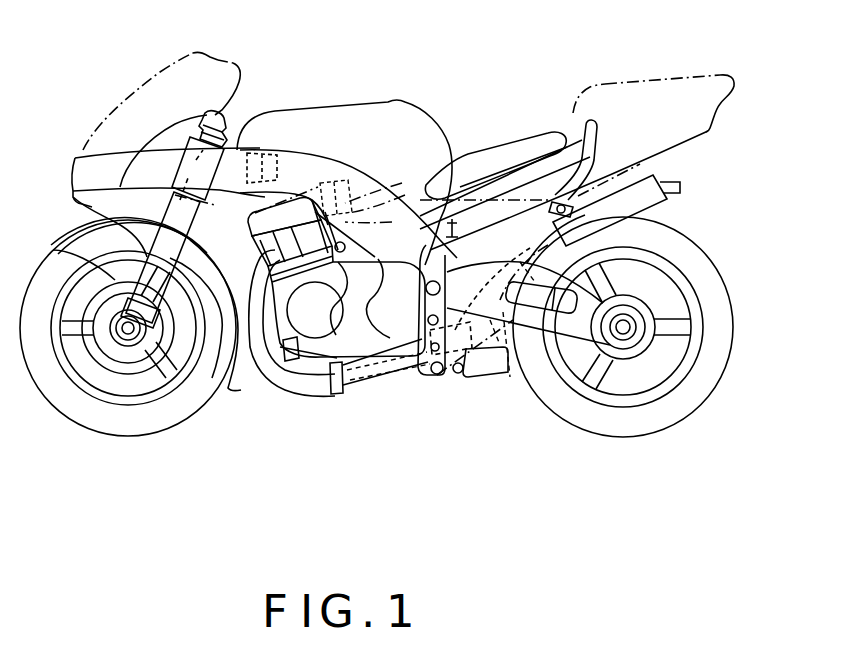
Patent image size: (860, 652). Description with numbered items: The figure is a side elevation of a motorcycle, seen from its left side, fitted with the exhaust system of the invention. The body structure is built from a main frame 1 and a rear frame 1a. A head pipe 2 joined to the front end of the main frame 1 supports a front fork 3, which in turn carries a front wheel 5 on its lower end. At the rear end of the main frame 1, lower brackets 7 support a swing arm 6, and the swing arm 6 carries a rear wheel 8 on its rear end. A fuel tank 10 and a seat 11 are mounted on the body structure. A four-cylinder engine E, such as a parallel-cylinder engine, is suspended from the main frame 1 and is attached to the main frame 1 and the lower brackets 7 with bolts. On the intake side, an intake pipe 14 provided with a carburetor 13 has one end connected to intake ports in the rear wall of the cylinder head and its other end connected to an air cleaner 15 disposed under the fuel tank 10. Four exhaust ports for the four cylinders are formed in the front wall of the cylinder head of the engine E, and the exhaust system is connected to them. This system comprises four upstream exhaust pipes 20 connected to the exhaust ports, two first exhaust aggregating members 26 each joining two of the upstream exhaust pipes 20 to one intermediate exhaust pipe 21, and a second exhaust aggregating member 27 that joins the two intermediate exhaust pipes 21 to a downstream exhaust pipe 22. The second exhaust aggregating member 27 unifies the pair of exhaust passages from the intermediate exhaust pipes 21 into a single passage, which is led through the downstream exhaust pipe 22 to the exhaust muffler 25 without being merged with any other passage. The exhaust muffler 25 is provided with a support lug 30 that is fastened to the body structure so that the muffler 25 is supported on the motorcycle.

The main frame 1 is at (344, 149).
The rear frame 1a is at (502, 220).
The head pipe 2 is at (197, 158).
The front fork 3 is at (173, 212).
The front wheel 5 is at (97, 420).
The swing arm 6 is at (582, 323).
The lower brackets 7 is at (427, 265).
The rear wheel 8 is at (662, 418).
The fuel tank 10 is at (408, 100).
The seat 11 is at (485, 150).
The carburetor 13 is at (350, 200).
The intake pipe 14 is at (338, 223).
The air cleaner 15 is at (302, 155).
The upstream exhaust pipes 20 is at (285, 378).
The intermediate exhaust pipes 21 is at (403, 368).
The downstream exhaust pipe 22 is at (507, 332).
The exhaust muffler 25 is at (655, 207).
The first exhaust aggregating members 26 is at (347, 395).
The second exhaust aggregating member 27 is at (470, 378).
The support lug 30 is at (567, 203).
The engine E is at (250, 225).